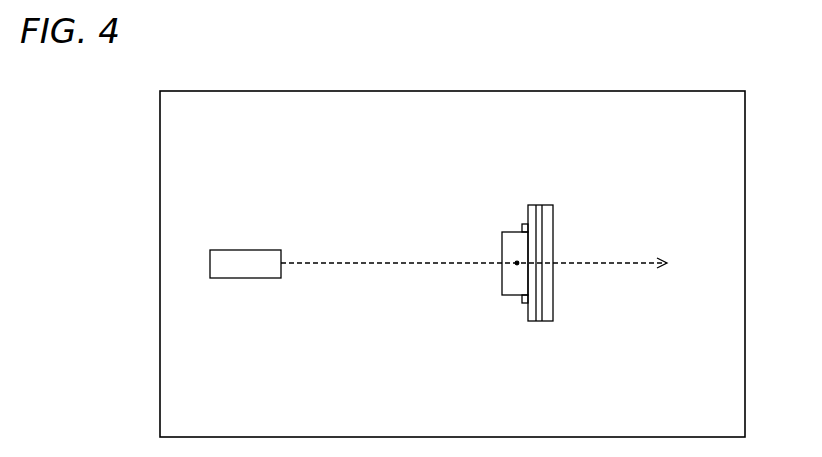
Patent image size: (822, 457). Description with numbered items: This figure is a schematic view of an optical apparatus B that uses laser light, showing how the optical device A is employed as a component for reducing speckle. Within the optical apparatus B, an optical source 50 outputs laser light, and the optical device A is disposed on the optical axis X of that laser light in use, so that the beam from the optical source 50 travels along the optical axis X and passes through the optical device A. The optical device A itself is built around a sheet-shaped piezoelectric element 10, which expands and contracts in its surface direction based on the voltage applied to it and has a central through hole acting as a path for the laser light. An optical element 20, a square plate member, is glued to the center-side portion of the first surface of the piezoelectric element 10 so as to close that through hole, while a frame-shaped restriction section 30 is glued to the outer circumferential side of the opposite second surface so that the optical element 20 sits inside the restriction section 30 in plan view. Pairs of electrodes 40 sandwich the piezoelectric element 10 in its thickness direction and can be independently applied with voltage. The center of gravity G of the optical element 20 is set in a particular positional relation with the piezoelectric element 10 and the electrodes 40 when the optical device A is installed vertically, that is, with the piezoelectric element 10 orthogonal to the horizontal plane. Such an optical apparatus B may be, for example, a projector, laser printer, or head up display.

The optical apparatus B is at (690, 90).
The optical device A is at (565, 178).
The optical axis X is at (484, 263).
The optical source 50 is at (242, 278).
The optical element 20 is at (503, 240).
The center of gravity G is at (516, 265).
The electrodes 40 is at (524, 225).
The piezoelectric element 10 is at (533, 322).
The restriction section 30 is at (553, 318).